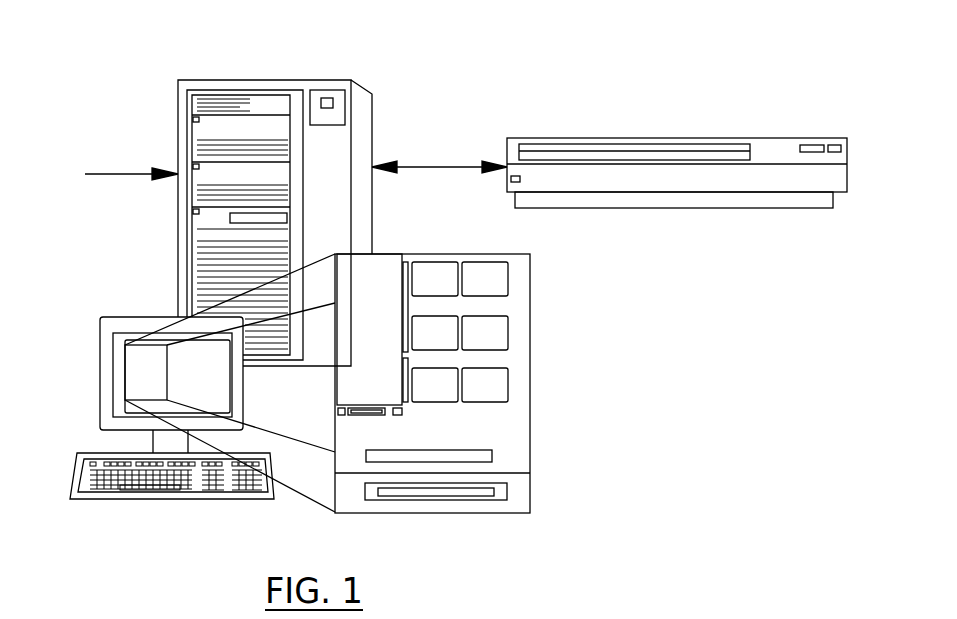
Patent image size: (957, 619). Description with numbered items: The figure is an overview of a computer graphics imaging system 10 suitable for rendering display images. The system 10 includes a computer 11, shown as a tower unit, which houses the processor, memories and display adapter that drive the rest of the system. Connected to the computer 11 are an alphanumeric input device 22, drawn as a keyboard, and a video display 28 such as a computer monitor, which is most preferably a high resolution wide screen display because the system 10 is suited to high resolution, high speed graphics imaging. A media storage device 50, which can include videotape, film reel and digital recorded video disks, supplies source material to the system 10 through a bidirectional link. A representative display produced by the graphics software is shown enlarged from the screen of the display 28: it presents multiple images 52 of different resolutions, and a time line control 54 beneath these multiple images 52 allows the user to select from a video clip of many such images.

The computer graphics imaging system 10 is at (490, 113).
The computer 11 is at (228, 83).
The alphanumeric input device 22 is at (152, 500).
The video display 28 is at (100, 373).
The media storage device 50 is at (642, 203).
The multiple images 52 is at (522, 328).
The time line control 54 is at (430, 497).